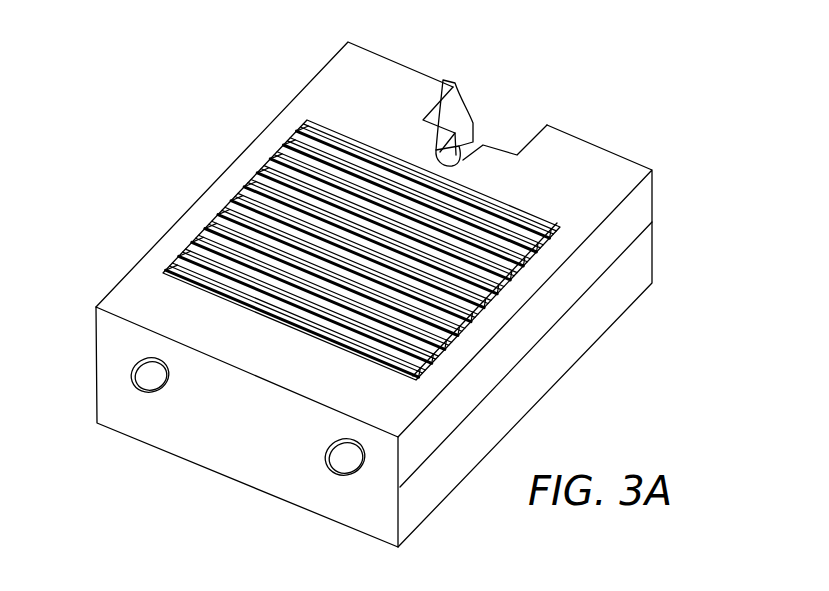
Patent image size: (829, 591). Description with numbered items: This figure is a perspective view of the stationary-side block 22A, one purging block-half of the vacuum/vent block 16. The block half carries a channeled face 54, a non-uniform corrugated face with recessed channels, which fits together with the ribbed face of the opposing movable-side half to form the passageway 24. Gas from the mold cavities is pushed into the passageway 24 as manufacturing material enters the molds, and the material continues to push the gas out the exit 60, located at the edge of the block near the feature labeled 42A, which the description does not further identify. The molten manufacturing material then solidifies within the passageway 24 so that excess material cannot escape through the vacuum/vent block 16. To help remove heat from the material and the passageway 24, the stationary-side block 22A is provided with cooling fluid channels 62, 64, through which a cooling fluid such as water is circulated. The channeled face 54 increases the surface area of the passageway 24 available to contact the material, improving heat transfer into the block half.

The vacuum/vent block 16 is at (150, 125).
The stationary-side block 22A is at (633, 162).
The passageway 24 is at (262, 352).
The slot / notch 42A is at (473, 123).
The channeled face 54 is at (533, 218).
The exit 60 is at (447, 110).
The cooling fluid channel 62 is at (348, 458).
The cooling fluid channel 64 is at (148, 378).